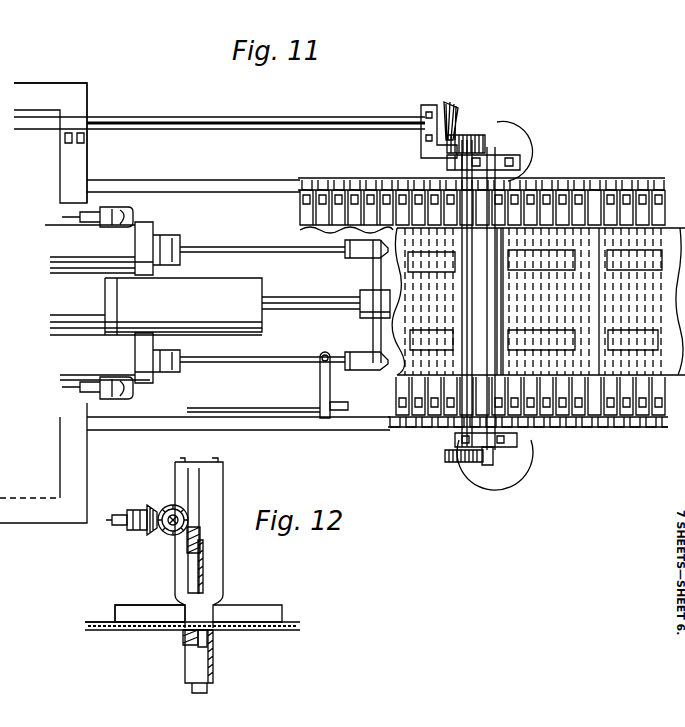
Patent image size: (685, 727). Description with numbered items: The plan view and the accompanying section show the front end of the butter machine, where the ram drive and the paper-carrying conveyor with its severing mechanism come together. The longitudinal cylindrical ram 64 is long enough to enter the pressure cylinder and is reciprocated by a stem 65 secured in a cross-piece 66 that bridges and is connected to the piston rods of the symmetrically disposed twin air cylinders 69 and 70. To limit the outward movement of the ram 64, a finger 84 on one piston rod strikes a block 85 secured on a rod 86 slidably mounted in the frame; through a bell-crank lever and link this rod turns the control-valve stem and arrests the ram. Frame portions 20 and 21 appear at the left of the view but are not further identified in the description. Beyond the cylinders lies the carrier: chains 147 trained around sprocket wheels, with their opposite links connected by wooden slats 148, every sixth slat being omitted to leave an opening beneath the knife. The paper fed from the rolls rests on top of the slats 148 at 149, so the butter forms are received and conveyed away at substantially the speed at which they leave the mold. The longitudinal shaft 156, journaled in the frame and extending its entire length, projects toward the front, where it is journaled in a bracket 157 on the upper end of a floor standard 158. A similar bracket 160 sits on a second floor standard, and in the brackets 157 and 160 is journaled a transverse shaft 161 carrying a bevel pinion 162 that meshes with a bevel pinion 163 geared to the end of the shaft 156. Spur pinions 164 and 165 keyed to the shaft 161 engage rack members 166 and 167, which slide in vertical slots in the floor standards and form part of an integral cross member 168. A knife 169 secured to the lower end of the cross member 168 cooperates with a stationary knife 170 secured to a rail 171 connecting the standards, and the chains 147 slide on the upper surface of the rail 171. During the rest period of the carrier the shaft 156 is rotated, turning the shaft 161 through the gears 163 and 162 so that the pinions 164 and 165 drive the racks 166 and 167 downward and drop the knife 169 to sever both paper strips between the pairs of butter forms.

In FIG. 11, the frame post 20 is at (65, 90).
In FIG. 11, the base 21 is at (23, 505).
In FIG. 11, the ram 64 is at (222, 283).
In FIG. 11, the stem 65 is at (311, 313).
In FIG. 11, the cross-piece 66 is at (373, 327).
In FIG. 11, the air cylinder 69 is at (120, 237).
In FIG. 11, the air cylinder 70 is at (157, 380).
In FIG. 11, the finger 84 is at (330, 387).
In FIG. 11, the block 85 is at (340, 405).
In FIG. 11, the rod 86 is at (232, 412).
In FIG. 11, the chain 147 is at (646, 430).
In FIG. 11, the wooden slat 148 is at (392, 412).
In FIG. 12, the wooden slat 148 is at (125, 625).
In FIG. 11, the paper 149 is at (538, 225).
In FIG. 11, the longitudinal shaft 156 is at (342, 125).
In FIG. 12, the longitudinal shaft 156 is at (114, 526).
In FIG. 11, the bracket 157 is at (437, 150).
In FIG. 12, the bracket 157 is at (127, 515).
In FIG. 12, the floor standard 158 is at (208, 662).
In FIG. 11, the bracket 160 is at (455, 440).
In FIG. 11, the transverse shaft 161 is at (440, 405).
In FIG. 12, the transverse shaft 161 is at (185, 520).
In FIG. 11, the bevel pinion 162 is at (462, 138).
In FIG. 11, the bevel pinion 163 is at (465, 103).
In FIG. 12, the bevel pinion 163 is at (152, 535).
In FIG. 11, the spur pinion 164 is at (457, 453).
In FIG. 11, the spur pinion 165 is at (447, 160).
In FIG. 12, the spur pinion 165 is at (170, 507).
In FIG. 11, the rack member 166 is at (488, 467).
In FIG. 11, the rack member 167 is at (487, 150).
In FIG. 12, the rack member 167 is at (188, 485).
In FIG. 11, the cross member 168 is at (522, 420).
In FIG. 12, the cross member 168 is at (190, 550).
In FIG. 11, the knife 169 is at (500, 363).
In FIG. 12, the knife 169 is at (202, 577).
In FIG. 12, the stationary knife 170 is at (207, 638).
In FIG. 12, the rail 171 is at (185, 647).